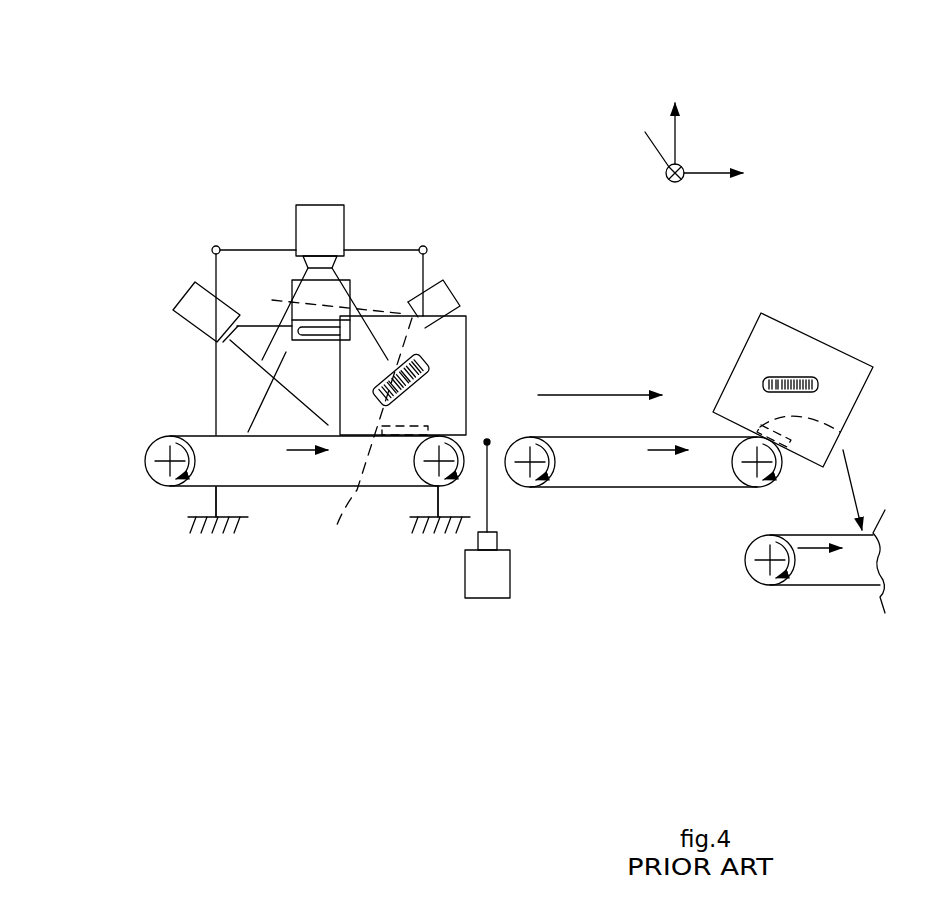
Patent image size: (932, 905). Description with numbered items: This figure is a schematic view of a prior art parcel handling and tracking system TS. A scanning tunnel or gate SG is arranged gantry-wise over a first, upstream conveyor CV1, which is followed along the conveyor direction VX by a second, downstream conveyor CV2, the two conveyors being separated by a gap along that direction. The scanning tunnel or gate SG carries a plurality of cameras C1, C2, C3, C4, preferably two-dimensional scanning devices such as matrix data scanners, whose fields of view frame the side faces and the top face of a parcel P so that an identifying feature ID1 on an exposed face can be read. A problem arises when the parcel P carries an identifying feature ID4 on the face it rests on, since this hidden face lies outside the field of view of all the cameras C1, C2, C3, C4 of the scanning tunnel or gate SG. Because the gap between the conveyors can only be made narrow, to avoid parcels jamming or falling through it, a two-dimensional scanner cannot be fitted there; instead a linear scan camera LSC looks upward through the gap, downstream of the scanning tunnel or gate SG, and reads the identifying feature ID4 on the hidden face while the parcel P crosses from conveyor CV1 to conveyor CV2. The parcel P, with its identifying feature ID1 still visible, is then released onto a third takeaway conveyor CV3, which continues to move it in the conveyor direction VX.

The parcel handling and tracking system TS is at (565, 133).
The scanning tunnel or gate SG is at (397, 246).
The camera C1 is at (330, 217).
The camera C2 is at (453, 293).
The camera C3 is at (195, 302).
The camera C4 is at (290, 288).
The parcel P is at (450, 338).
The identifying feature ID1 is at (413, 393).
The identifying feature ID4 is at (865, 435).
The first conveyor CV1 is at (200, 433).
The second conveyor CV2 is at (672, 433).
The third conveyor CV3 is at (792, 530).
The conveyor direction VX is at (585, 395).
The linear scan camera LSC is at (500, 572).